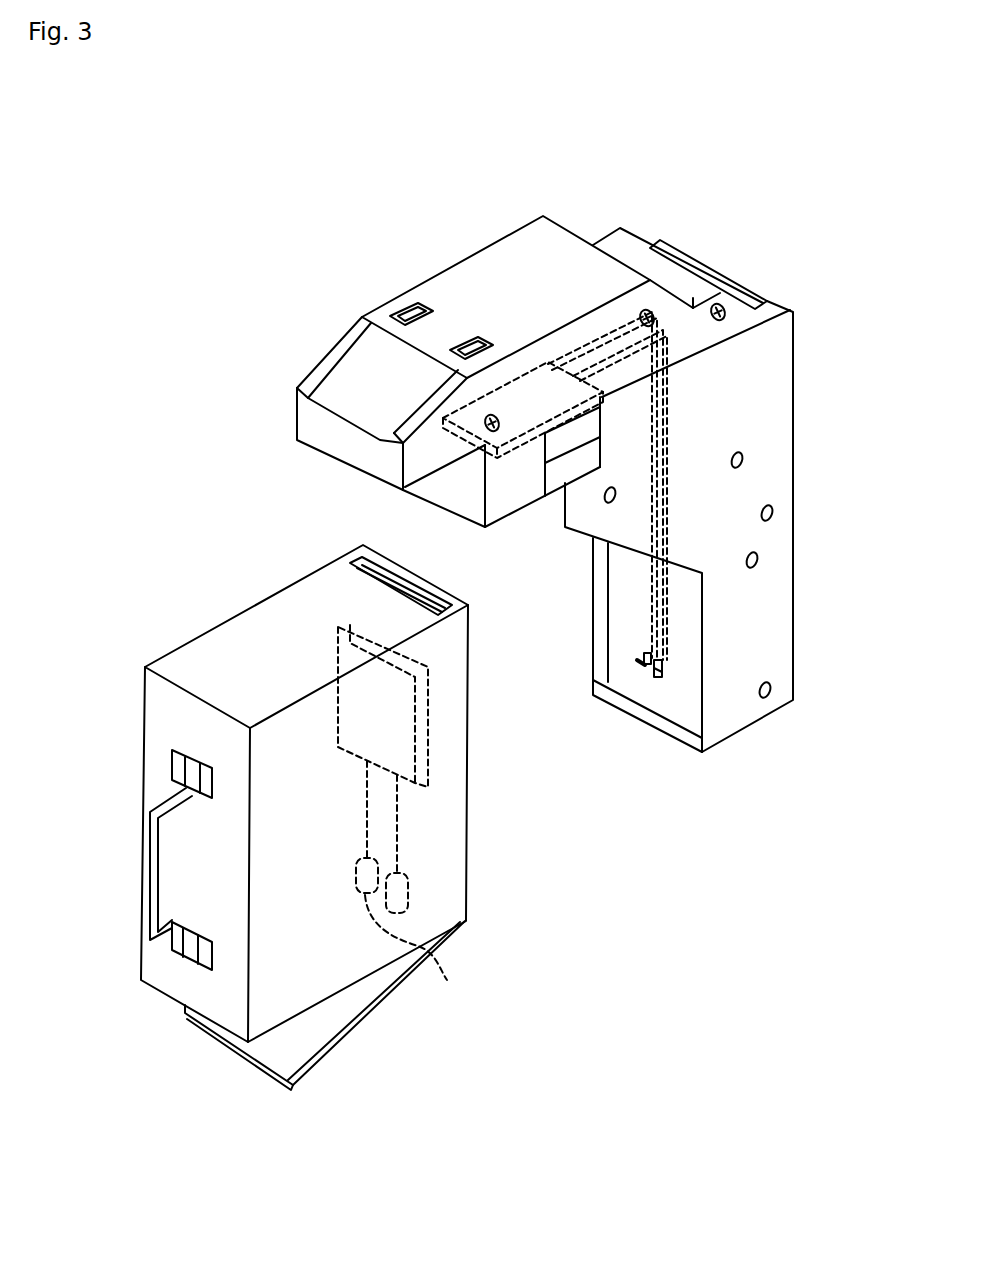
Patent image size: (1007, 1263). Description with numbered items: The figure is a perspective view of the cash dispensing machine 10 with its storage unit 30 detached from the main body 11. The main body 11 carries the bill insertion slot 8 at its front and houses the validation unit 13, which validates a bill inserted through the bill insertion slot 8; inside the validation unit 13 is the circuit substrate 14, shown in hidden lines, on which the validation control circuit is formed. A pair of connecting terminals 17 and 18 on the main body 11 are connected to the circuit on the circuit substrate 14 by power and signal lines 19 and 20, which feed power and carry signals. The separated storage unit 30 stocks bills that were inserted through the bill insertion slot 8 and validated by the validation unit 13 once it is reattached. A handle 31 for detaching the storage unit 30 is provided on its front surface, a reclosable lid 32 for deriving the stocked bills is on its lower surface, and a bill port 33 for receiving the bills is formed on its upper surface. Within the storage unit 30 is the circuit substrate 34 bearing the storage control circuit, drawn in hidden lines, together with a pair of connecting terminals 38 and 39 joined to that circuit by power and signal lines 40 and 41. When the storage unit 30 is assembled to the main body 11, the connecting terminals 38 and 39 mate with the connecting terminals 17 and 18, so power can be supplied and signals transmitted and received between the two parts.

The bill insertion slot 8 is at (360, 393).
The cash dispensing machine 10 is at (570, 458).
The main body 11 is at (797, 367).
The validation unit 13 is at (460, 349).
The circuit substrate 14 is at (541, 385).
The connecting terminal 17 is at (647, 662).
The connecting terminal 18 is at (646, 668).
The power and signal line 19 is at (668, 427).
The power and signal line 20 is at (652, 512).
The storage unit 30 is at (298, 791).
The handle 31 is at (152, 890).
The reclosable lid 32 is at (337, 1017).
The bill port 33 is at (355, 558).
The circuit substrate 34 is at (342, 630).
The connecting terminal 38 is at (417, 955).
The connecting terminal 39 is at (397, 888).
The power and signal line 40 is at (367, 793).
The power and signal line 41 is at (400, 827).